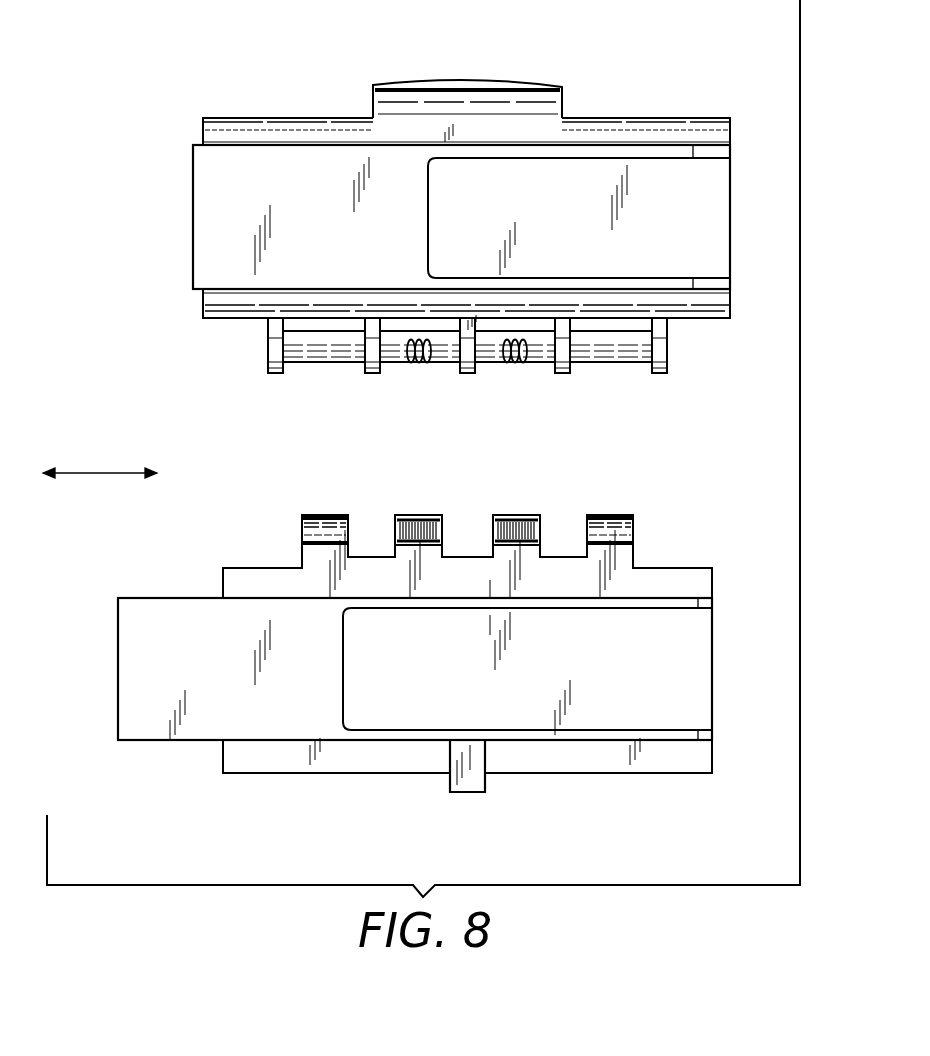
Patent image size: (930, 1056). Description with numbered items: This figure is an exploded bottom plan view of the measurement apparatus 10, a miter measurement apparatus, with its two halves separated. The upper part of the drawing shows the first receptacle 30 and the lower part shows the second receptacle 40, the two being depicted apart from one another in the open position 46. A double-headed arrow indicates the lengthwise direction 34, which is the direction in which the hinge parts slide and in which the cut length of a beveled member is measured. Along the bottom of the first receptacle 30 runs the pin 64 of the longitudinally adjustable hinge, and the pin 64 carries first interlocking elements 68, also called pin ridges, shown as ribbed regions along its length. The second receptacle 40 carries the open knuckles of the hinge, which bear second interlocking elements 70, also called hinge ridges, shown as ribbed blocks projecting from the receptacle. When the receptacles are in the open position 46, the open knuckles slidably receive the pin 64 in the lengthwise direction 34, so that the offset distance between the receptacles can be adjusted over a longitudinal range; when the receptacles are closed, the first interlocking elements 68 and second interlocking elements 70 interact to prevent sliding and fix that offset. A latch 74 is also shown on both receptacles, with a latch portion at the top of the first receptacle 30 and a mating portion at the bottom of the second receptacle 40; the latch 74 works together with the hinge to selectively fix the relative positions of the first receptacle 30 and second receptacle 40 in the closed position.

The measurement apparatus 10 is at (722, 68).
The first receptacle 30 is at (200, 210).
The latch 74 is at (472, 80).
The pin 64 is at (607, 356).
The first interlocking elements 68 is at (418, 364).
The lengthwise direction 34 is at (100, 472).
The second interlocking elements 70 is at (422, 514).
The second receptacle 40 is at (128, 672).
The open position 46 is at (698, 795).